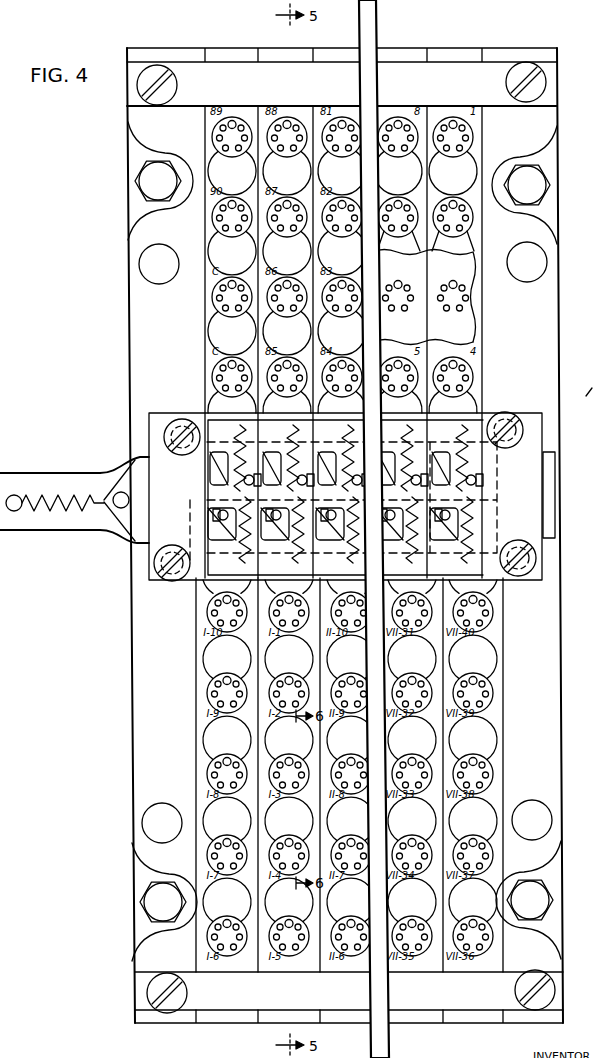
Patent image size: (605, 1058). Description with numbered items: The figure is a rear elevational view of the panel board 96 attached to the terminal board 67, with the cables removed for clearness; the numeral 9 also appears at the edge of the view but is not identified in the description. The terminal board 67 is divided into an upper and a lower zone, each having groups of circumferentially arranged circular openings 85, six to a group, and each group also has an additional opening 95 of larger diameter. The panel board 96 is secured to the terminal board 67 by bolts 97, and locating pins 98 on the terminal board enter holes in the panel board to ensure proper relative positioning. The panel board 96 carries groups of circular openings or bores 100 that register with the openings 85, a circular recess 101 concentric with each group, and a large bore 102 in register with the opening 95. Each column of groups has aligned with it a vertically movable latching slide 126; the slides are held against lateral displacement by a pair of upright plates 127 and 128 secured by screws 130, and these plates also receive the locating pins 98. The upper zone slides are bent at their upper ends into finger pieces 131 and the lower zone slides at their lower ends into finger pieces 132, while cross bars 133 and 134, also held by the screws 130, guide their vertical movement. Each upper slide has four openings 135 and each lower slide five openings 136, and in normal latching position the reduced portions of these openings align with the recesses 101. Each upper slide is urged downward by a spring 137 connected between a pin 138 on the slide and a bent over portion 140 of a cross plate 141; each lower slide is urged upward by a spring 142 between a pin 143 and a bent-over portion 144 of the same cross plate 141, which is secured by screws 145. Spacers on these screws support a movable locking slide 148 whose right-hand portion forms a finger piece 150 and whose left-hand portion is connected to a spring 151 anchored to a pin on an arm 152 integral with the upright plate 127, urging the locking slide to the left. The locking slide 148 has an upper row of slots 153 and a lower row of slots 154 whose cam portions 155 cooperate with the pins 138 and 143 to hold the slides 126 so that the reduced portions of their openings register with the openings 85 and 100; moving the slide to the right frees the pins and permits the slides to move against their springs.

The chassis 9 is at (595, 387).
The terminal board 67 is at (476, 331).
The circumferentially arranged circular openings 85 is at (466, 312).
The additional opening 95 is at (456, 287).
The panel board 96 is at (476, 249).
The bolts 97 is at (143, 181).
The locating pins 98 is at (150, 265).
The circular openings or bores 100 is at (462, 222).
The circular recess 101 is at (425, 241).
The large bore 102 is at (452, 122).
The latching slide 126 is at (330, 337).
The upright plate 127 is at (130, 361).
The upright plate 128 is at (556, 367).
The screws 130 is at (143, 88).
The finger pieces 131 is at (272, 57).
The finger pieces 132 is at (385, 1018).
The cross bar 133 is at (249, 101).
The cross bar 134 is at (317, 1008).
The openings 135 is at (330, 252).
The openings 136 is at (195, 815).
The spring 137 is at (470, 556).
The pin 138 is at (334, 501).
The bent over portion 140 is at (195, 587).
The cross plate 141 is at (153, 532).
The spring 142 is at (215, 475).
The pin 143 is at (222, 515).
The bent-over portion 144 is at (470, 432).
The screws 145 is at (178, 420).
The locking slide 148 is at (137, 478).
The finger piece 150 is at (556, 489).
The spring 151 is at (55, 512).
The arm 152 is at (40, 474).
The slots 153 is at (212, 468).
The slots 154 is at (356, 534).
The cam portions 155 is at (228, 483).